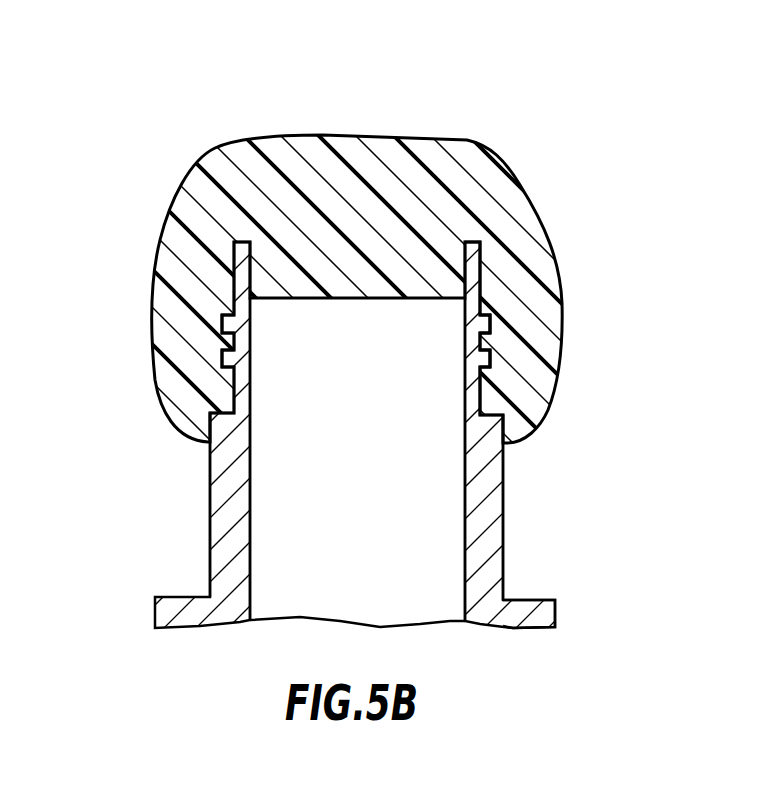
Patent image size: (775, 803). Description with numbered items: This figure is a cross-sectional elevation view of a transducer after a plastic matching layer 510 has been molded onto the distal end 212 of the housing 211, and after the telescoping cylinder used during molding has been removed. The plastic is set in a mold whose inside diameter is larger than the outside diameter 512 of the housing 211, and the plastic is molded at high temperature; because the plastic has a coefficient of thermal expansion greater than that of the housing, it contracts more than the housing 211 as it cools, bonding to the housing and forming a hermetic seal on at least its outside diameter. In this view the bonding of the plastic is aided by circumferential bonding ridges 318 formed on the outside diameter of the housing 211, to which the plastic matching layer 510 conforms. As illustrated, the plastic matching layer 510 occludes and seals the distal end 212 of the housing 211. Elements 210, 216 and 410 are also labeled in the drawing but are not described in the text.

The housing / tubular body 210 is at (155, 571).
The housing 211 is at (527, 607).
The distal end 212 is at (205, 242).
The cap / seal member 216 is at (409, 116).
The circumferential bonding ridges 318 is at (485, 330).
The inner bore diameter 410 is at (463, 432).
The plastic matching layer 510 is at (490, 250).
The outside diameter 512 is at (494, 498).